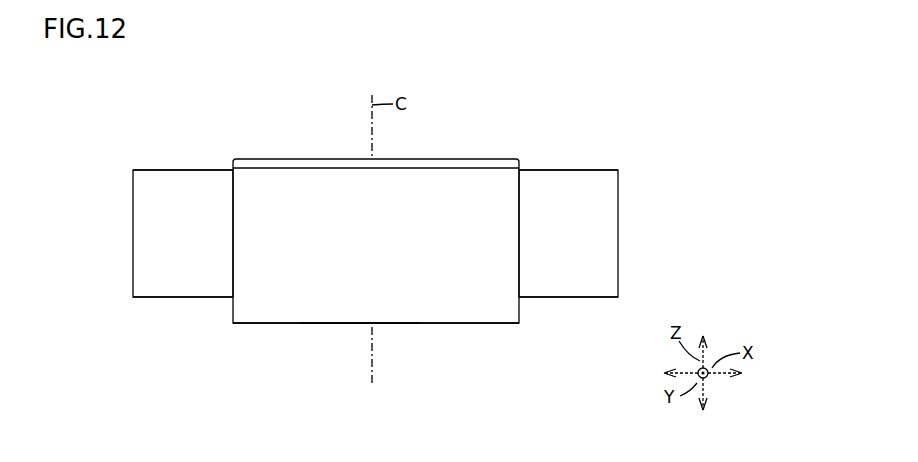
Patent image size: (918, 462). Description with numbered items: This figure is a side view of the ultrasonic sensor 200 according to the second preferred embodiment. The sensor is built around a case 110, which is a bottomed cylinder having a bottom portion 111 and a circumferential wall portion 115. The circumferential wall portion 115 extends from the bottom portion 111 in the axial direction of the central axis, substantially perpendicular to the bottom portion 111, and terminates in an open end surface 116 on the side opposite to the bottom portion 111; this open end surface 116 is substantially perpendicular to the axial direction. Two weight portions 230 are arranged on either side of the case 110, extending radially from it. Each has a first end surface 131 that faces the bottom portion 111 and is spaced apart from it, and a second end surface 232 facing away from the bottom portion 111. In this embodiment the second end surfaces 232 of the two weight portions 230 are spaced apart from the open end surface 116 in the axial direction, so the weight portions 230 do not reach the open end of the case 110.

The ultrasonic sensor 200 is at (619, 116).
The case 110 is at (461, 313).
The bottom portion 111 is at (458, 157).
The circumferential wall portion 115 is at (352, 275).
The open end surface 116 is at (292, 326).
The weight portions 230 is at (141, 240).
The first end surface 131 is at (182, 169).
The second end surfaces 232 is at (183, 300).